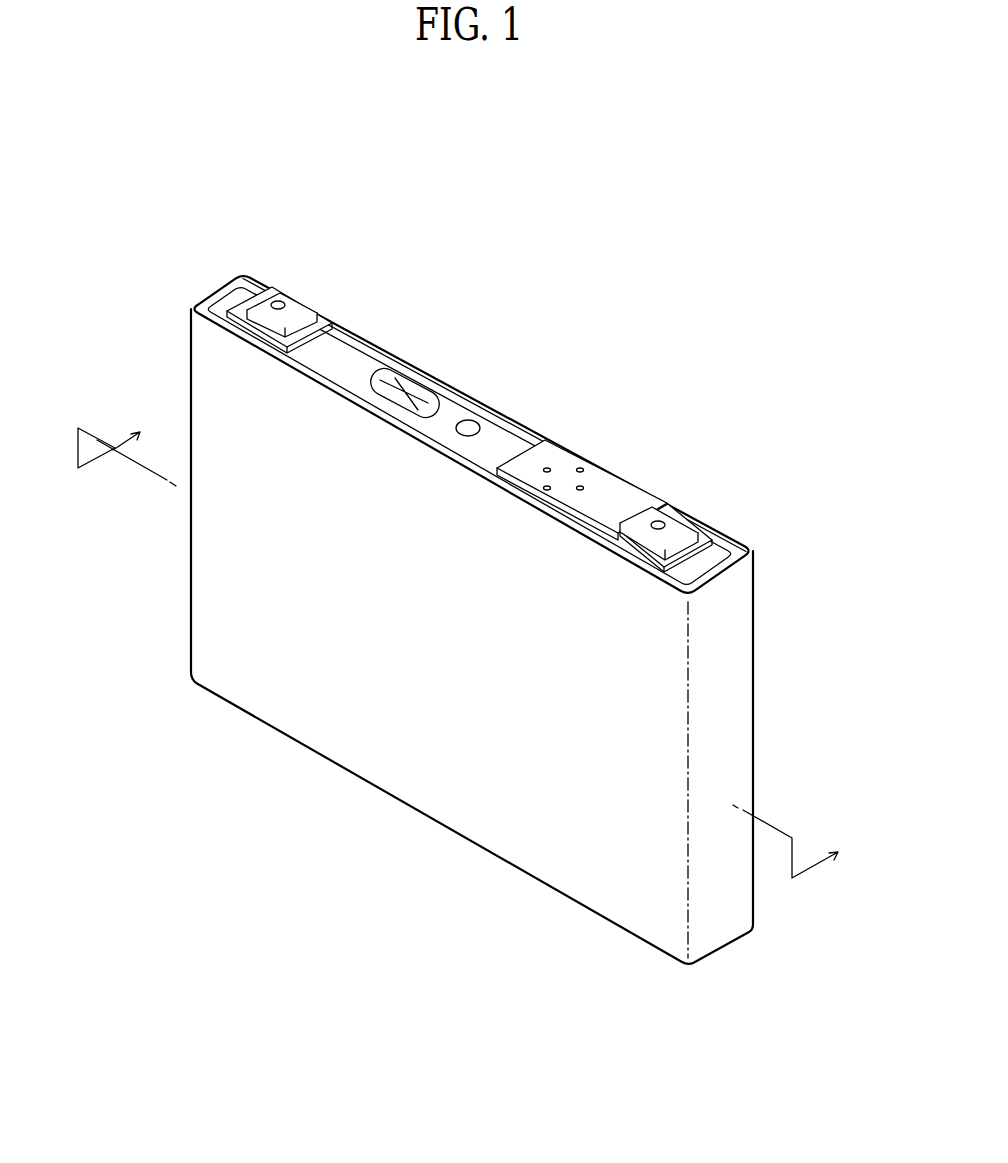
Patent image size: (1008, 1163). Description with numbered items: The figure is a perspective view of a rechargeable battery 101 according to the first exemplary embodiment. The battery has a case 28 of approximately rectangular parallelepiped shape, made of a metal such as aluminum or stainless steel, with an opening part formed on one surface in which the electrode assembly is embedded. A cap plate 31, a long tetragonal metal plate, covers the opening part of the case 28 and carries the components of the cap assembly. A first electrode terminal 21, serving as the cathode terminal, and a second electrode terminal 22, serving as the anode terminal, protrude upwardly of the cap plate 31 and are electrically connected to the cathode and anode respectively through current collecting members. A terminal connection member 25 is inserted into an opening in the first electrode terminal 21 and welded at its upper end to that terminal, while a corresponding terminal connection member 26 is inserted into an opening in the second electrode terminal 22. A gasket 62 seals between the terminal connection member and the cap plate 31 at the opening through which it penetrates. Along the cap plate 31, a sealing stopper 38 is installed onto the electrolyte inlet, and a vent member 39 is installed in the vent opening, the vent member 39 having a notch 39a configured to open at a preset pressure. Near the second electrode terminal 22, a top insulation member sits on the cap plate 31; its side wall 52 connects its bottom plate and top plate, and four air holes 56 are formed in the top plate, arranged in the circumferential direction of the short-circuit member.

The rechargeable battery 101 is at (510, 175).
The first electrode terminal 21 is at (295, 305).
The second electrode terminal 22 is at (677, 525).
The terminal connection member 25 is at (277, 301).
The terminal connection member 26 is at (659, 521).
The case 28 is at (382, 755).
The cap plate 31 is at (350, 350).
The sealing stopper 38 is at (472, 425).
The vent member 39 is at (434, 388).
The notch 39a is at (407, 390).
The side wall 52 is at (237, 309).
The air holes 56 is at (581, 468).
The gasket 62 is at (705, 537).